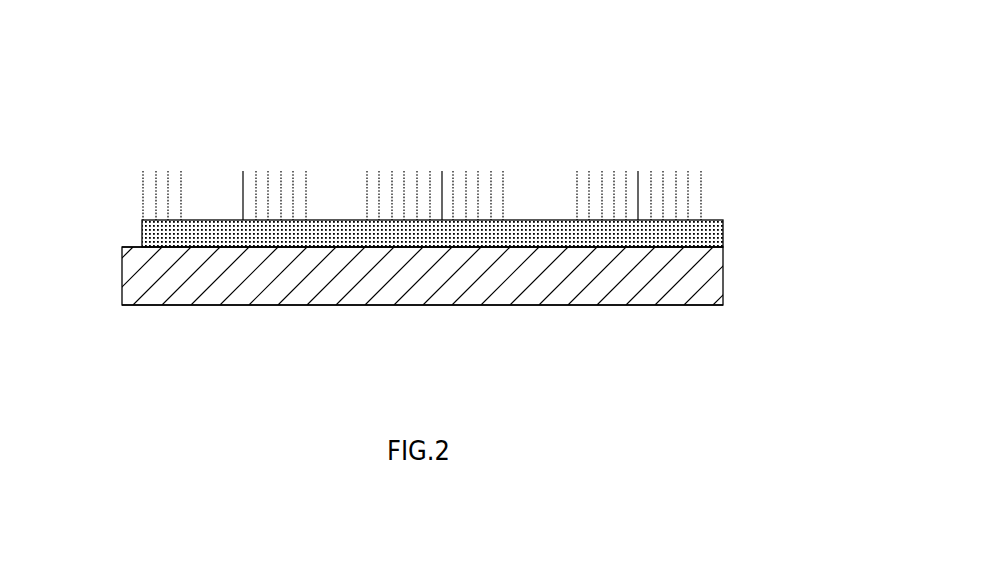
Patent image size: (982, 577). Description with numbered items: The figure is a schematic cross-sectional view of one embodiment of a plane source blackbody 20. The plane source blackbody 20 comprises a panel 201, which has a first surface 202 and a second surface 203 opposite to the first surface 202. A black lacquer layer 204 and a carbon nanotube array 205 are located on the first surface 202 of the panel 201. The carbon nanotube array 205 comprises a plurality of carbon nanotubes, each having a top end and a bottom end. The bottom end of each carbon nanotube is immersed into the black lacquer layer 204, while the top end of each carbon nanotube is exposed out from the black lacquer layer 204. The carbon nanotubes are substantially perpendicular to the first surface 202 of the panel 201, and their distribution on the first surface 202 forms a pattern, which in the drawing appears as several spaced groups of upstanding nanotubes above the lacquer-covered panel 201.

The plane source blackbody 20 is at (427, 97).
The panel 201 is at (667, 292).
The first surface 202 is at (132, 247).
The second surface 203 is at (140, 307).
The black lacquer layer 204 is at (725, 237).
The carbon nanotube array 205 is at (675, 177).